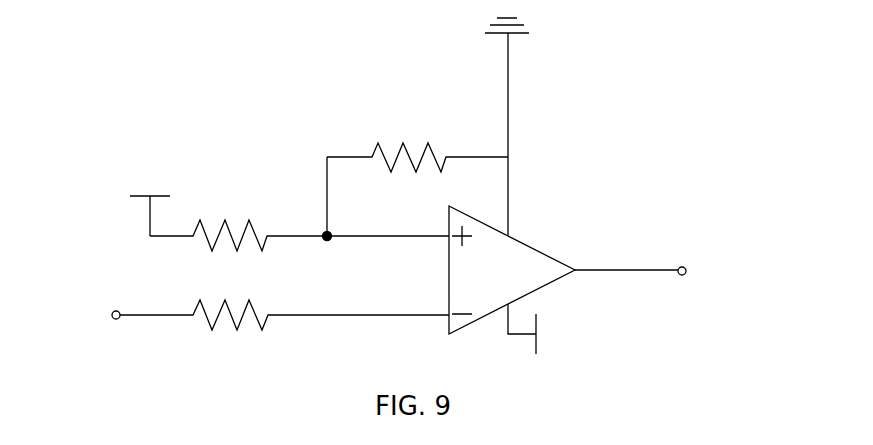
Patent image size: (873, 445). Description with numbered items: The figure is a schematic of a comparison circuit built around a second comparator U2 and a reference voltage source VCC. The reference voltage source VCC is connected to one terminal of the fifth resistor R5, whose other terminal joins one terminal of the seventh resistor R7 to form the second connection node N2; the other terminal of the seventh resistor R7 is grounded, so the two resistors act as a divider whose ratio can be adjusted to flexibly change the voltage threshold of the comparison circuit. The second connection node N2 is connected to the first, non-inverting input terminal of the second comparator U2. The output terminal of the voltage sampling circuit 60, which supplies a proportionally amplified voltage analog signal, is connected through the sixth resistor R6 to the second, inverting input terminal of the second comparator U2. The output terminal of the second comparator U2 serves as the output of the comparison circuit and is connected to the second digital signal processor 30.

The second digital signal processor 30 is at (748, 270).
The voltage sampling circuit 60 is at (72, 314).
The fifth resistor R5 is at (238, 224).
The sixth resistor R6 is at (284, 307).
The seventh resistor R7 is at (417, 146).
The second comparator U2 is at (567, 280).
The second connection node N2 is at (379, 214).
The reference voltage source VCC is at (147, 203).